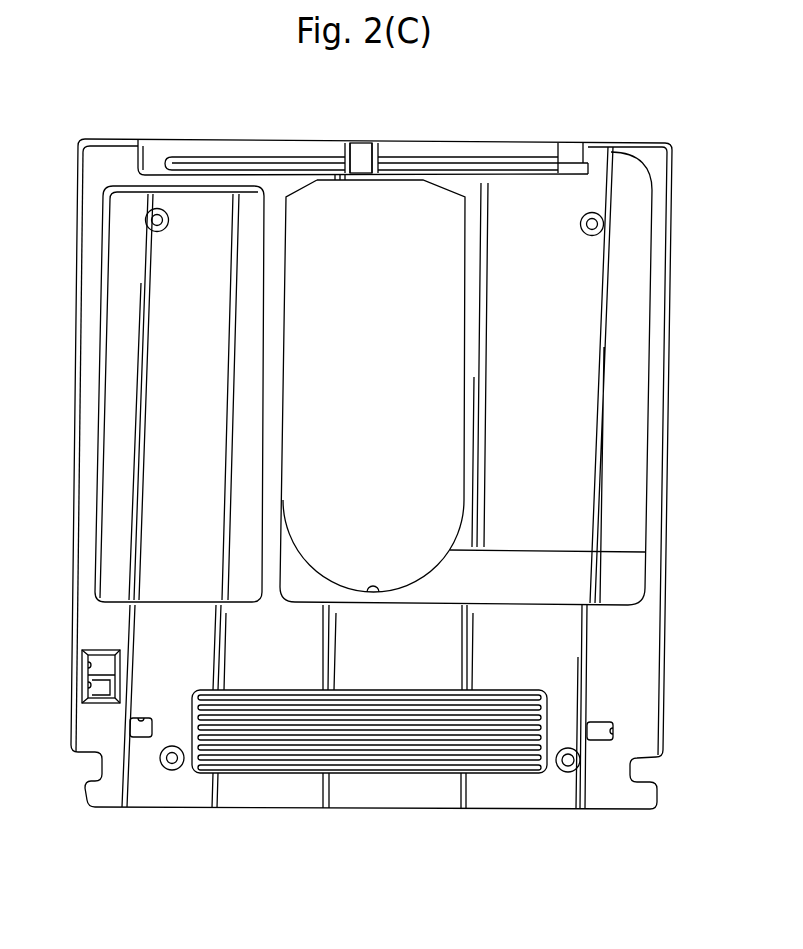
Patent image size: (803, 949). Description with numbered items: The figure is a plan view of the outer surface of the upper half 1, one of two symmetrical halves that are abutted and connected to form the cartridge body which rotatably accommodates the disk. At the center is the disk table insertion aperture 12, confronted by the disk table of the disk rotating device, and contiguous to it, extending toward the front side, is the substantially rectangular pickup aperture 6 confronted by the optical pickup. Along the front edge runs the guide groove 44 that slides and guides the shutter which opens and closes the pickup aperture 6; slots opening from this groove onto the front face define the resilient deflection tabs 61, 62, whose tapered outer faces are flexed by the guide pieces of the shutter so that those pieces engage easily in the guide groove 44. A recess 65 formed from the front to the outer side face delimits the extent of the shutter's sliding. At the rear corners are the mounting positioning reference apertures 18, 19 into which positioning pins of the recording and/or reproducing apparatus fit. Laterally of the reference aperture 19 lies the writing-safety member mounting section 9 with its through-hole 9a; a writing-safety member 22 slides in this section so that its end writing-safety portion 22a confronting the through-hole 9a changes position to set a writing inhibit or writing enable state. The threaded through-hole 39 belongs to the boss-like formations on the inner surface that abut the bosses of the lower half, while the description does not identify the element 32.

The upper half 1 is at (668, 190).
The pickup aperture 6 is at (457, 329).
The writing-safety member mounting section 9 is at (88, 668).
The through-hole 9a is at (90, 692).
The disk table insertion aperture 12 is at (373, 594).
The mounting positioning reference aperture 18 is at (612, 732).
The mounting positioning reference aperture 19 is at (147, 718).
The writing-safety member 22 is at (101, 692).
The writing-safety portion 22a is at (100, 663).
The screw hole 32 is at (173, 770).
The threaded through-hole 39 is at (168, 221).
The guide groove 44 is at (309, 161).
The resilient deflection tab 61 is at (364, 156).
The resilient deflection tab 62 is at (571, 150).
The recess 65 is at (646, 352).